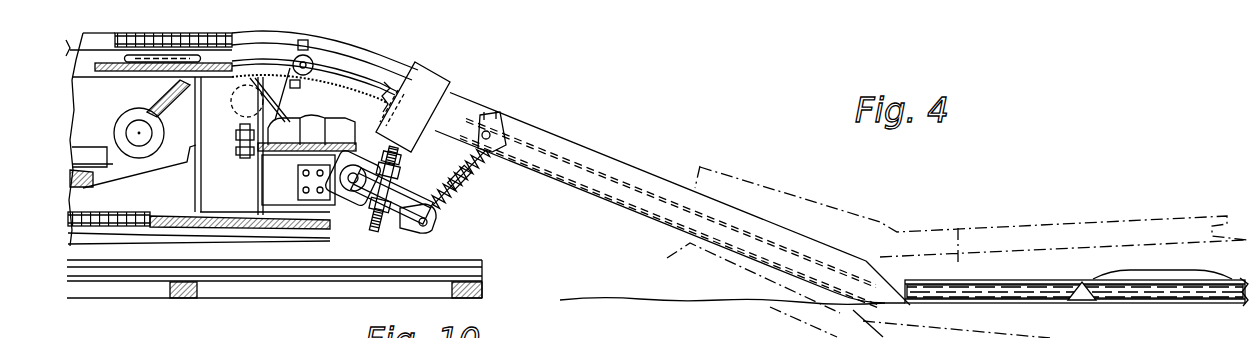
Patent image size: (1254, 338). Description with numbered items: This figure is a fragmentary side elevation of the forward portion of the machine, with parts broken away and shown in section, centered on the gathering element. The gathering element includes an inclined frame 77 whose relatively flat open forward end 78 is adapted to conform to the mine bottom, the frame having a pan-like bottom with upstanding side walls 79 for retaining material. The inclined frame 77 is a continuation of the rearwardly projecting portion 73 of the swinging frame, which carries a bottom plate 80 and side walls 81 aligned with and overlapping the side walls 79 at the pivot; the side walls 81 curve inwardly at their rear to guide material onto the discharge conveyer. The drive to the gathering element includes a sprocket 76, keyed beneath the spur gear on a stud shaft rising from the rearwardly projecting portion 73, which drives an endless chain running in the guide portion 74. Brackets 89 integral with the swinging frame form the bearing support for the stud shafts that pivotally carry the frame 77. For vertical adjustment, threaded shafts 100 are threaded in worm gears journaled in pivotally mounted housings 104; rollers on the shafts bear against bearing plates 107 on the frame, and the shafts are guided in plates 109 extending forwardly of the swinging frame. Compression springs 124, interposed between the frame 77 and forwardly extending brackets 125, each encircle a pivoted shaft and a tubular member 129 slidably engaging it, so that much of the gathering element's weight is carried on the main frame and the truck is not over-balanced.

The rearwardly projecting portion 73 is at (185, 84).
The guide portion 74 is at (272, 30).
The sprocket 76 is at (125, 57).
The inclined frame 77 is at (590, 194).
The forward end 78 is at (1190, 305).
The side walls 79 is at (604, 155).
The bottom plate 80 is at (96, 78).
The side walls 81 is at (86, 42).
The brackets 89 is at (260, 95).
The threaded shafts 100 is at (396, 172).
The housings 104 is at (387, 230).
The bearing plates 107 is at (406, 152).
The plates 109 is at (452, 84).
The compression springs 124 is at (447, 204).
The brackets 125 is at (414, 233).
The tubular member 129 is at (468, 173).